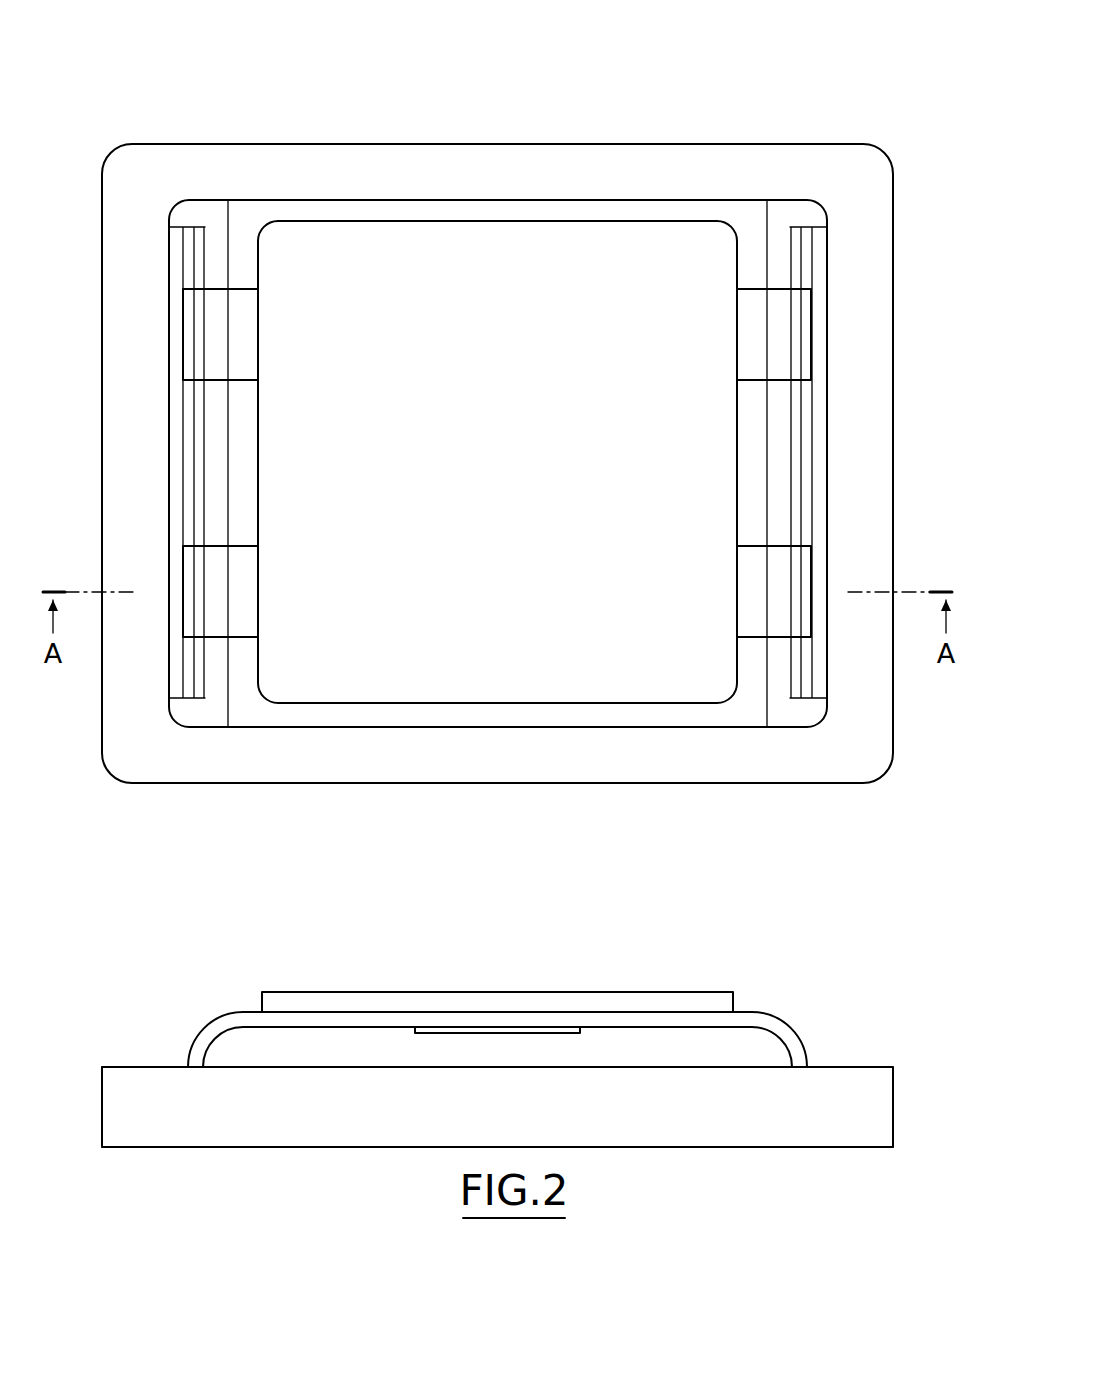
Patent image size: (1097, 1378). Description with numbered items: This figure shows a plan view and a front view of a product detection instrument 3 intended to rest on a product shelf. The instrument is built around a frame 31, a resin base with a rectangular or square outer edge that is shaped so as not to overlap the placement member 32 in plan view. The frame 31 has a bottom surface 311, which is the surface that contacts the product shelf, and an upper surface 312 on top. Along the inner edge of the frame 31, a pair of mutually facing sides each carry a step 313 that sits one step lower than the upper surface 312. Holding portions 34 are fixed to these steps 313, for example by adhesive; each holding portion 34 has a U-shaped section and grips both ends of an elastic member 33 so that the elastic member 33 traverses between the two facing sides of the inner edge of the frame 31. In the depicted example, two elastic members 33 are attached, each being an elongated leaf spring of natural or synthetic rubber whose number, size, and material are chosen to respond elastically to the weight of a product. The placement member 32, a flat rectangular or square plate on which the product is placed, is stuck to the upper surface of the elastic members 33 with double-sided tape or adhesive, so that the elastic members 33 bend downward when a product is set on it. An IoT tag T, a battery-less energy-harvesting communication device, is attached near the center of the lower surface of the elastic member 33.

The product detection instrument 3 is at (827, 86).
The frame 31 is at (369, 763).
The bottom surface 311 is at (157, 1153).
The upper surface 312 is at (567, 762).
The step 313 is at (213, 212).
The placement member 32 is at (432, 247).
The elastic member 33 is at (797, 337).
The holding portion 34 is at (190, 238).
The IoT tag T is at (566, 1037).